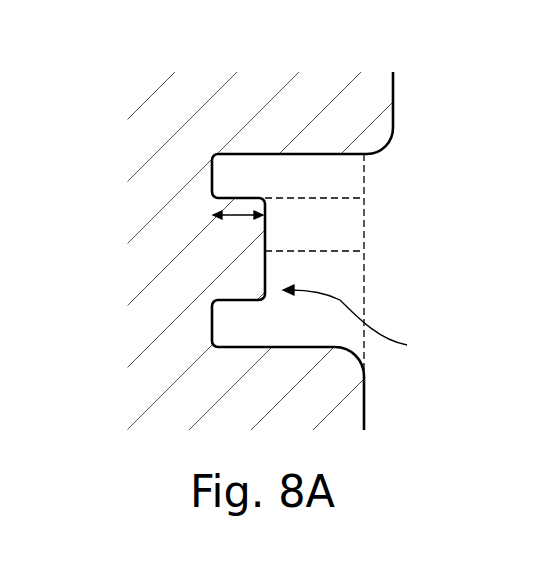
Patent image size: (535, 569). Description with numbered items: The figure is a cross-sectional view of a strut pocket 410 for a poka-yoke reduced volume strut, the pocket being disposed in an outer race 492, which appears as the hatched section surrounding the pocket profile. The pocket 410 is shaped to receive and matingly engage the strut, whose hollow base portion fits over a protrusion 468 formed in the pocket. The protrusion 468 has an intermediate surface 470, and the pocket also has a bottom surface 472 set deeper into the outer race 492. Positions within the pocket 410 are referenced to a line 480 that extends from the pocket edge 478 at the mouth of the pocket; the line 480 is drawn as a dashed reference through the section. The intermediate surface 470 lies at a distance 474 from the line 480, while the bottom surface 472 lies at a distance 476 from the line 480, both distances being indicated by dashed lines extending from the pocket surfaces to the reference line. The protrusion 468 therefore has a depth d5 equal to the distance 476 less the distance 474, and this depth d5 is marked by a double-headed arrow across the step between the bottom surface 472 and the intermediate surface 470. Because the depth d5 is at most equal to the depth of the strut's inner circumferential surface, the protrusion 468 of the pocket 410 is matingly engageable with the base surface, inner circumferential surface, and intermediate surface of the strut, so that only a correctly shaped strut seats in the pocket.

The outer race 492 is at (248, 110).
The strut pocket 410 is at (320, 155).
The bottom surface 472 is at (212, 172).
The intermediate surface 470 is at (268, 277).
The depth d5 is at (210, 215).
The distance 476 is at (333, 200).
The distance 474 is at (333, 252).
The line 480 is at (365, 289).
The protrusion 468 is at (370, 322).
The pocket edge 478 is at (365, 402).